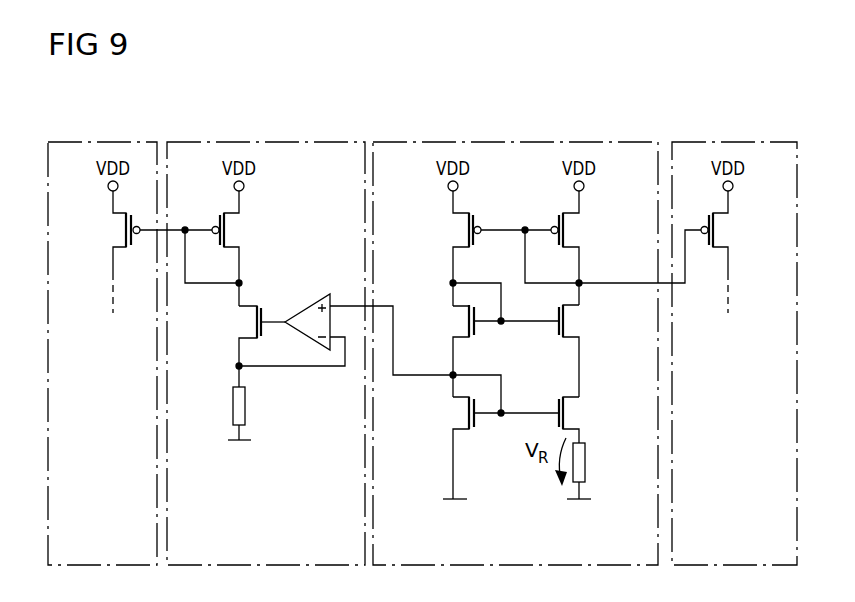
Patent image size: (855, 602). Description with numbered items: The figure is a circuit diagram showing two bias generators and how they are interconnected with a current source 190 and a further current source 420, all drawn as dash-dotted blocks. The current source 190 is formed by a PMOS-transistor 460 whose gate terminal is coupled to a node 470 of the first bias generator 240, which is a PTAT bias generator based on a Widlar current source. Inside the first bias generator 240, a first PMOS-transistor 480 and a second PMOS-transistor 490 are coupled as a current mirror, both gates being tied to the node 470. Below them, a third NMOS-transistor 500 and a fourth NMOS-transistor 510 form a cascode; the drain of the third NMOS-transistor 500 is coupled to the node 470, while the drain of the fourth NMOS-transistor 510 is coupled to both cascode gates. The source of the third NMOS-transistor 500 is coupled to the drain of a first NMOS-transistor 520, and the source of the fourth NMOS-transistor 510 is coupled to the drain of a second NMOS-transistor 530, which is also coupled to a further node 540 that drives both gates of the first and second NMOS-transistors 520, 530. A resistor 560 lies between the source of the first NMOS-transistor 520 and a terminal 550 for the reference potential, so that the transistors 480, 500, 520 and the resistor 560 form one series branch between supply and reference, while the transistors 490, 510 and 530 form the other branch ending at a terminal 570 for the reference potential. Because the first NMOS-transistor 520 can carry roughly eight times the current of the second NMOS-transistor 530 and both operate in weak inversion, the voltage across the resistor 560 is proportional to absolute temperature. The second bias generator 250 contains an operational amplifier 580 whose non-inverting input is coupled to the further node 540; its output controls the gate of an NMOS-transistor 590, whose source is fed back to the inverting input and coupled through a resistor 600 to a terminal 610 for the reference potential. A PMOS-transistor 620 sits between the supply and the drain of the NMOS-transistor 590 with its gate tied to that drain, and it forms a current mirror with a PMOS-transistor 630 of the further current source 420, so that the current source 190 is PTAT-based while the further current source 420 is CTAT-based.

The current source 190 is at (732, 142).
The first bias generator 240 is at (528, 142).
The second bias generator 250 is at (273, 142).
The further current source 420 is at (110, 142).
The PMOS-transistor 460 is at (718, 229).
The node 470 is at (583, 282).
The first PMOS-transistor 480 is at (567, 229).
The second PMOS-transistor 490 is at (466, 230).
The third NMOS-transistor 500 is at (567, 320).
The fourth NMOS-transistor 510 is at (466, 321).
The first NMOS-transistor 520 is at (567, 412).
The second NMOS-transistor 530 is at (466, 413).
The further node 540 is at (457, 374).
The terminal for the reference potential 550 is at (576, 502).
The resistor 560 is at (589, 462).
The terminal for the reference potential 570 is at (450, 502).
The operational amplifier 580 is at (310, 297).
The NMOS-transistor 590 is at (252, 322).
The resistor 600 is at (248, 402).
The terminal for the reference potential 610 is at (240, 442).
The PMOS-transistor 620 is at (227, 229).
The PMOS-transistor 630 is at (124, 230).